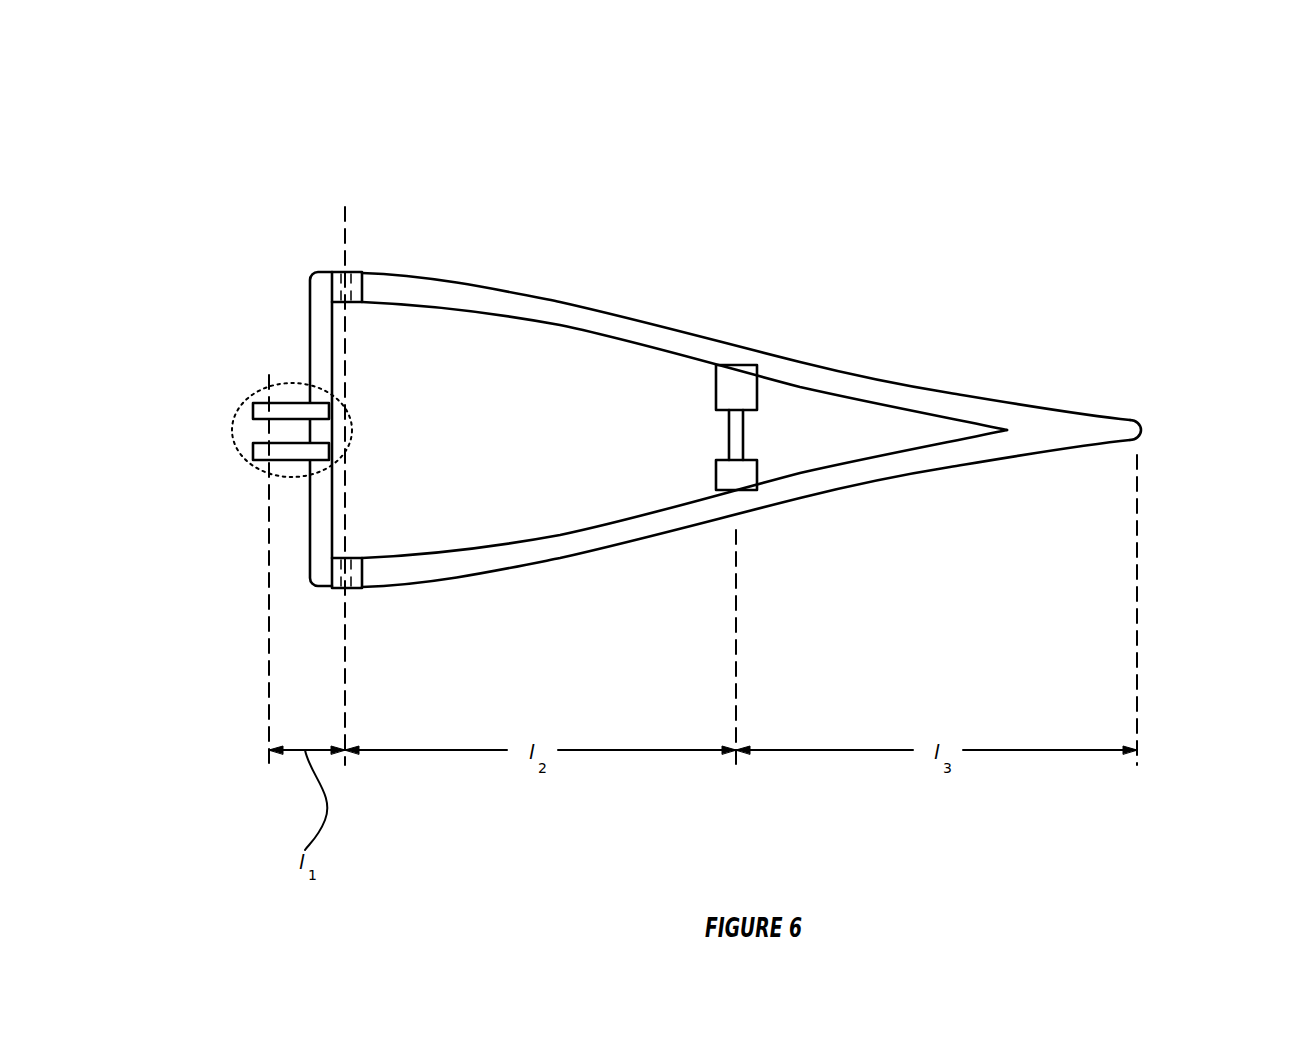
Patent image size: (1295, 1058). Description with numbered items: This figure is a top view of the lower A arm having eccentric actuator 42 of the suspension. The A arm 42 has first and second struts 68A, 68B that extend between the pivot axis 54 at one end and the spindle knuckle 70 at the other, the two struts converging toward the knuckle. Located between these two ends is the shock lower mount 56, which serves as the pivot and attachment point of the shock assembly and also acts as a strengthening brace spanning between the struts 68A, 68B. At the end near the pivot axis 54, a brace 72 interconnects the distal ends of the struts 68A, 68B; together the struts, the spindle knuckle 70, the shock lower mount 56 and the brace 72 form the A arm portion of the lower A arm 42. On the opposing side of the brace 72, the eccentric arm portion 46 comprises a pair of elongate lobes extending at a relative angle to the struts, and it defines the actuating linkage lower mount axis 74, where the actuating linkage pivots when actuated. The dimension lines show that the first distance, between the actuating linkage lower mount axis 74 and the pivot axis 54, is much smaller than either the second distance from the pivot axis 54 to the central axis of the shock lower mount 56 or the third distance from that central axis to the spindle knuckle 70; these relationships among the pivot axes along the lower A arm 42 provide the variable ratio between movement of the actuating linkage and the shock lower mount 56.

The lower A arm having eccentric actuator 42 is at (1007, 175).
The eccentric arm portion 46 is at (233, 440).
The pivot axis 54 is at (345, 237).
The shock lower mount 56 is at (758, 432).
The first strut 68A is at (590, 305).
The second strut 68B is at (568, 557).
The spindle knuckle 70 is at (1148, 405).
The brace 72 is at (310, 537).
The actuating linkage lower mount axis 74 is at (268, 383).